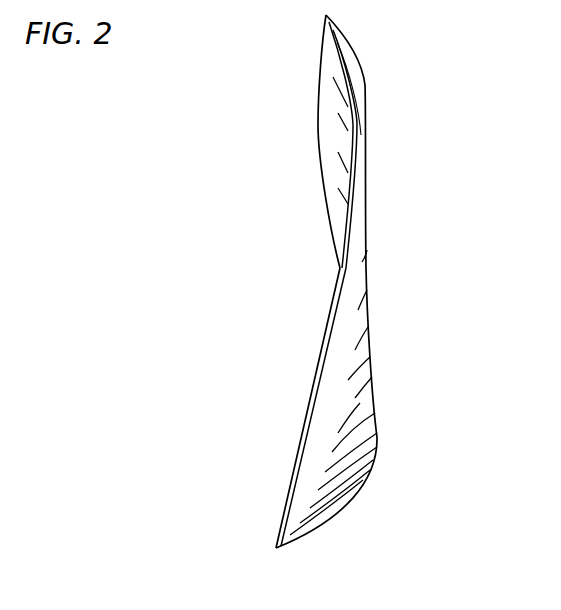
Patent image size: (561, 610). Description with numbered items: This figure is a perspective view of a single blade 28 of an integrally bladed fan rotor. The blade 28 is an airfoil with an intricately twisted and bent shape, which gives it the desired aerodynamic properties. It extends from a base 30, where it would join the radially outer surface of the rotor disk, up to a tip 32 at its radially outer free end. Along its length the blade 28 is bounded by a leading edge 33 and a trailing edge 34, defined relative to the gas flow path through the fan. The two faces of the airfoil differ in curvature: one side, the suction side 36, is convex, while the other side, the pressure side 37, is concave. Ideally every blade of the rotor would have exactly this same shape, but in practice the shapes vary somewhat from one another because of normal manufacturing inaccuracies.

The blade 28 is at (233, 71).
The base 30 is at (348, 475).
The tip 32 is at (363, 67).
The leading edge 33 is at (318, 79).
The trailing edge 34 is at (320, 383).
The suction side 36 is at (363, 397).
The pressure side 37 is at (331, 154).